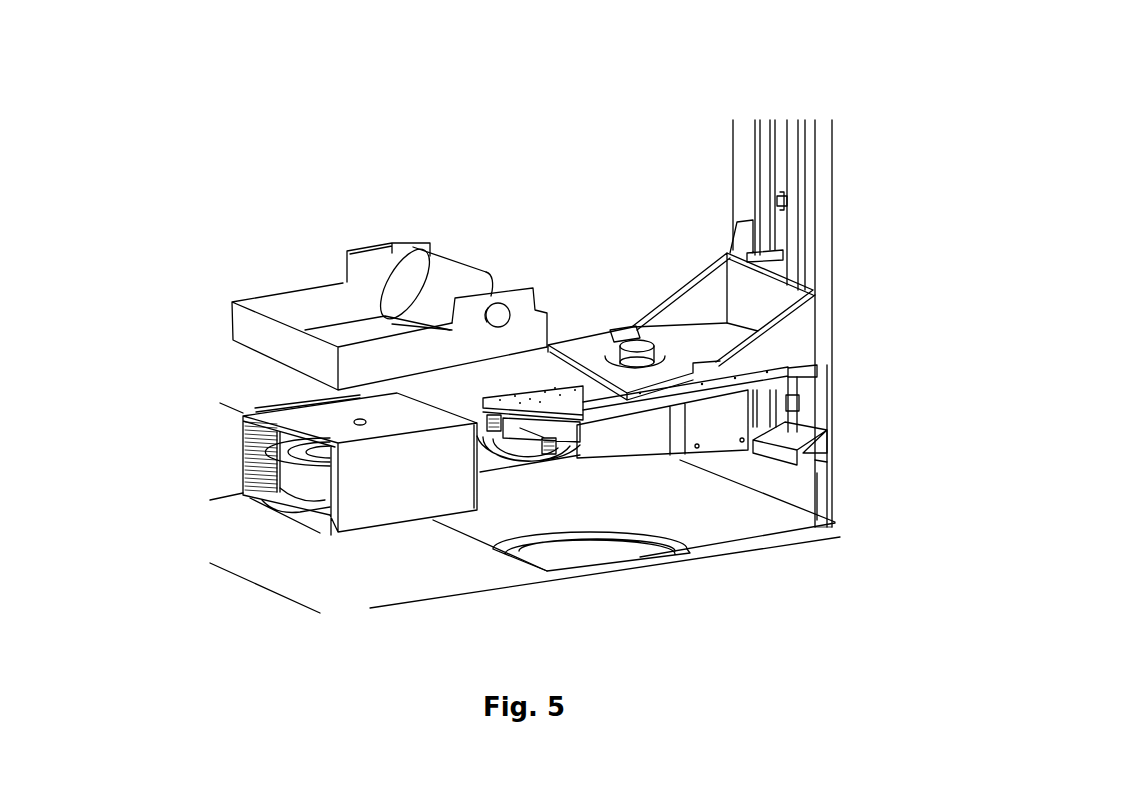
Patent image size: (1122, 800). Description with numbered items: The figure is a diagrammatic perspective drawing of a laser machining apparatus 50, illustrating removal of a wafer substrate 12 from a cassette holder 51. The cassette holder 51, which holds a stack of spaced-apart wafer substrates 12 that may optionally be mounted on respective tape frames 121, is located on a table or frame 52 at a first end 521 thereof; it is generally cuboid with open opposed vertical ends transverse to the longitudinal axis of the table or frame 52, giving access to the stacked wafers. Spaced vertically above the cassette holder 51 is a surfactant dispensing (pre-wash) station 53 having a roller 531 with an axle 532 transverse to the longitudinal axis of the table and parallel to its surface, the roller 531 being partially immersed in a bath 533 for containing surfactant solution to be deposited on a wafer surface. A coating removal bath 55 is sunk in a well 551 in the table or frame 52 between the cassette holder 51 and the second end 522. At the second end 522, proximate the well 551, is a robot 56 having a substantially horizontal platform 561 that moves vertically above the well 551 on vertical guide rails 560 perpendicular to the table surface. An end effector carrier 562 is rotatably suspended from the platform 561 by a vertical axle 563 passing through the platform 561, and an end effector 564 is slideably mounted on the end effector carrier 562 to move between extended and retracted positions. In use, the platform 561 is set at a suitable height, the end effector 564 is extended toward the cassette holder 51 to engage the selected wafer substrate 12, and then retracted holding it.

The laser machining apparatus 50 is at (347, 132).
The surfactant dispensing (pre-wash) station 53 is at (453, 236).
The roller 531 is at (469, 269).
The axle 532 is at (523, 299).
The bath 533 is at (278, 310).
The robot 56 is at (896, 266).
The guide rails 560 is at (742, 172).
The platform 561 is at (722, 354).
The end effector carrier 562 is at (506, 394).
The vertical axle 563 is at (628, 330).
The end effector 564 is at (537, 462).
The cassette holder 51 is at (183, 392).
The wafer substrate 12 is at (292, 506).
The tape frame 121 is at (500, 607).
The table or frame 52 is at (417, 572).
The well 551 is at (743, 509).
The first end 521 is at (264, 594).
The second end 522 is at (850, 490).
The coating removal bath 55 is at (612, 550).